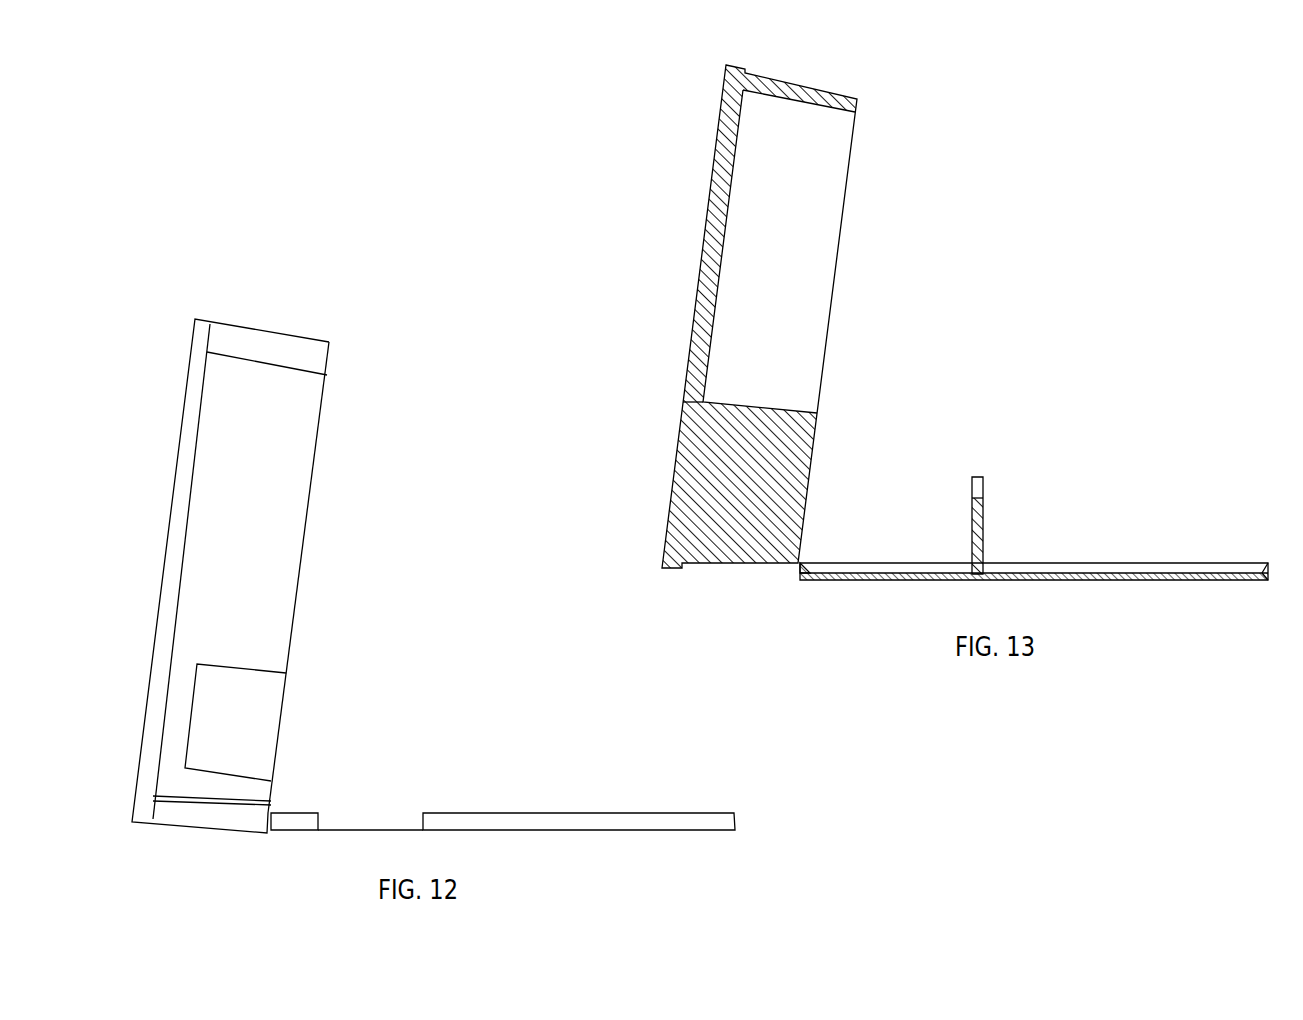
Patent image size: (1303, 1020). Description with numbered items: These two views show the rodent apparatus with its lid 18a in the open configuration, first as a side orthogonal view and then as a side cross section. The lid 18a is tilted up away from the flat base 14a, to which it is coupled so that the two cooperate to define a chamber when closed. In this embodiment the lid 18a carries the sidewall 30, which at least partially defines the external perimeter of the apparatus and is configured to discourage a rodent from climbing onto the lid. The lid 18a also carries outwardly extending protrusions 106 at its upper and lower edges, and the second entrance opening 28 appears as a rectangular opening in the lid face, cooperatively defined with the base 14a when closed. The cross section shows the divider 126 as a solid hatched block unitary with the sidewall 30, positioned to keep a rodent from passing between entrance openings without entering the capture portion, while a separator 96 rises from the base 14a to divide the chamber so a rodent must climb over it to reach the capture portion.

In FIG. 12, the base 14a is at (619, 781).
In FIG. 13, the base 14a is at (1170, 518).
In FIG. 12, the lid 18a is at (332, 544).
In FIG. 13, the lid 18a is at (915, 272).
In FIG. 12, the second entrance opening 28 is at (265, 673).
In FIG. 12, the sidewall 30 is at (290, 487).
In FIG. 13, the sidewall 30 is at (803, 87).
In FIG. 13, the separator 96 is at (984, 507).
In FIG. 12, the protrusion 106 is at (315, 355).
In FIG. 13, the divider 126 is at (813, 461).